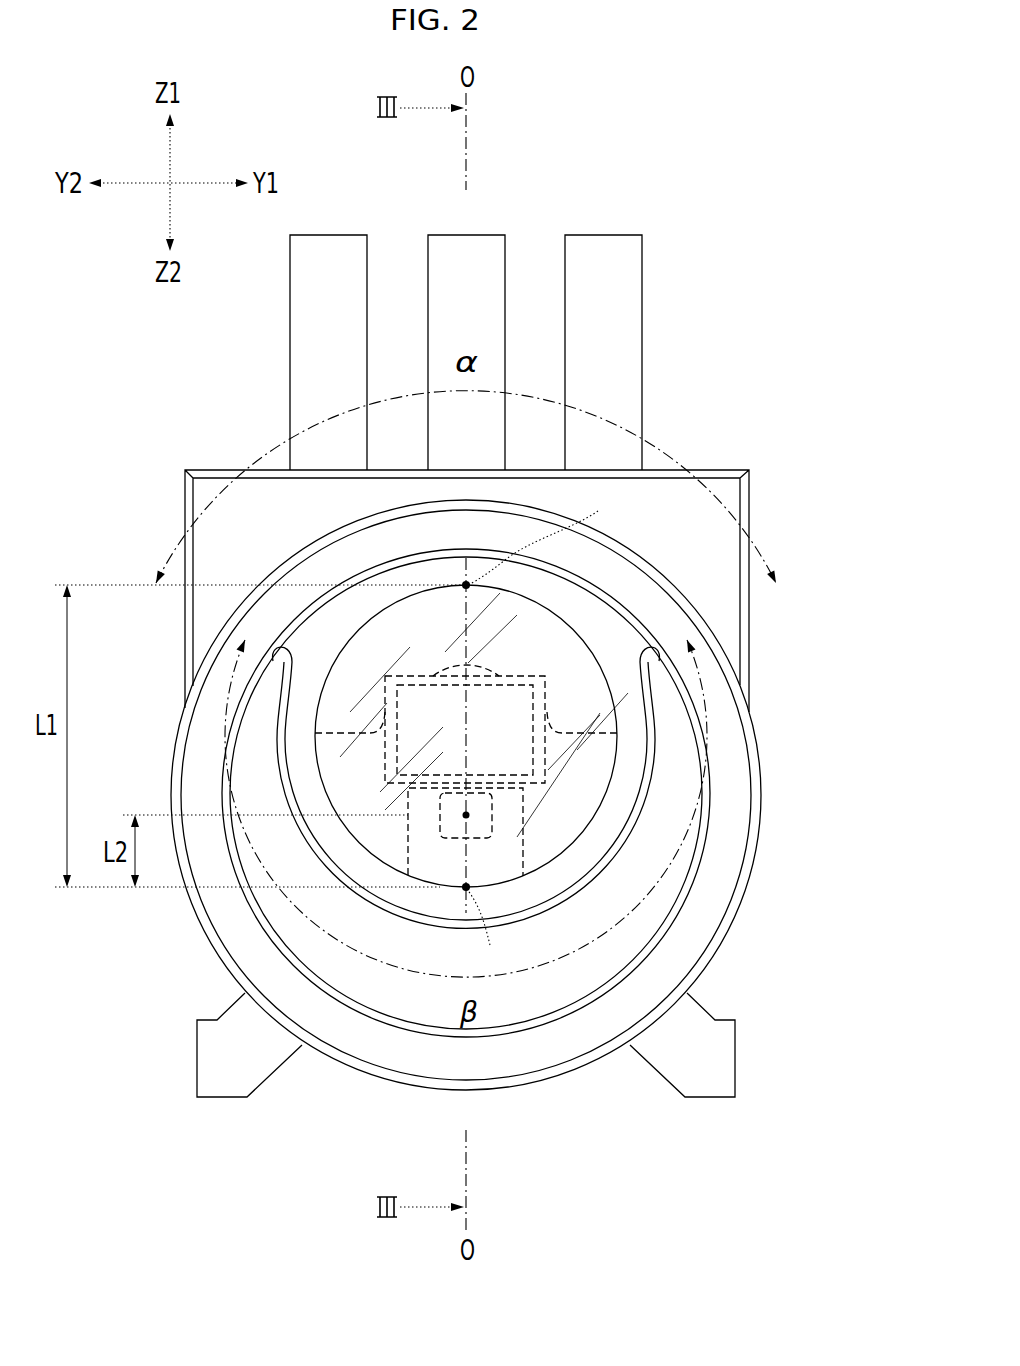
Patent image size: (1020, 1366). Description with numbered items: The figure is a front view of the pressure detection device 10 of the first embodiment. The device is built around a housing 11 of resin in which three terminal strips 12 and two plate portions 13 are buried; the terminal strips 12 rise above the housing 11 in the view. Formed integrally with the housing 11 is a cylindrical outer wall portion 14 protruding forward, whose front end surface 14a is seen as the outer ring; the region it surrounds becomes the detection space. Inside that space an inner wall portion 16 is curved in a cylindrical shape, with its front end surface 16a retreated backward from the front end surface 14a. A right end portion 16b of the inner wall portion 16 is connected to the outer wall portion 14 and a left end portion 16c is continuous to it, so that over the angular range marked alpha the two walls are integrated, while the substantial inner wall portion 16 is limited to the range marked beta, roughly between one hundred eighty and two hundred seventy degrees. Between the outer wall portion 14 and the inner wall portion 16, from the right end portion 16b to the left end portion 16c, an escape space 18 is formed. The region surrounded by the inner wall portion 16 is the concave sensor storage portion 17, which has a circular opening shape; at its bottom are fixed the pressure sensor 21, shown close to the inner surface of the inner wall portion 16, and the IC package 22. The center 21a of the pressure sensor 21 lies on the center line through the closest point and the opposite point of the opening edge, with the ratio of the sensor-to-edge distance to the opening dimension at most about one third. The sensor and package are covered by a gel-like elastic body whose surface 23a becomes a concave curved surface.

The pressure detection device 10 is at (736, 361).
The housing 11 is at (750, 487).
The terminal strips 12 is at (610, 247).
The plate portions 13 is at (712, 1058).
The outer wall portion 14 is at (207, 940).
The front end surface of the outer wall portion 14a is at (355, 1038).
The inner wall portion 16 is at (524, 841).
The front end surface of the inner wall portion 16a is at (422, 900).
The right end portion 16b is at (645, 647).
The left end portion 16c is at (290, 647).
The sensor storage portion 17 is at (506, 690).
The escape space 18 is at (543, 1013).
The pressure sensor 21 is at (631, 872).
The center of the pressure sensor 21a is at (466, 816).
The IC package 22 is at (517, 755).
The surface of the elastic body 23a is at (445, 612).